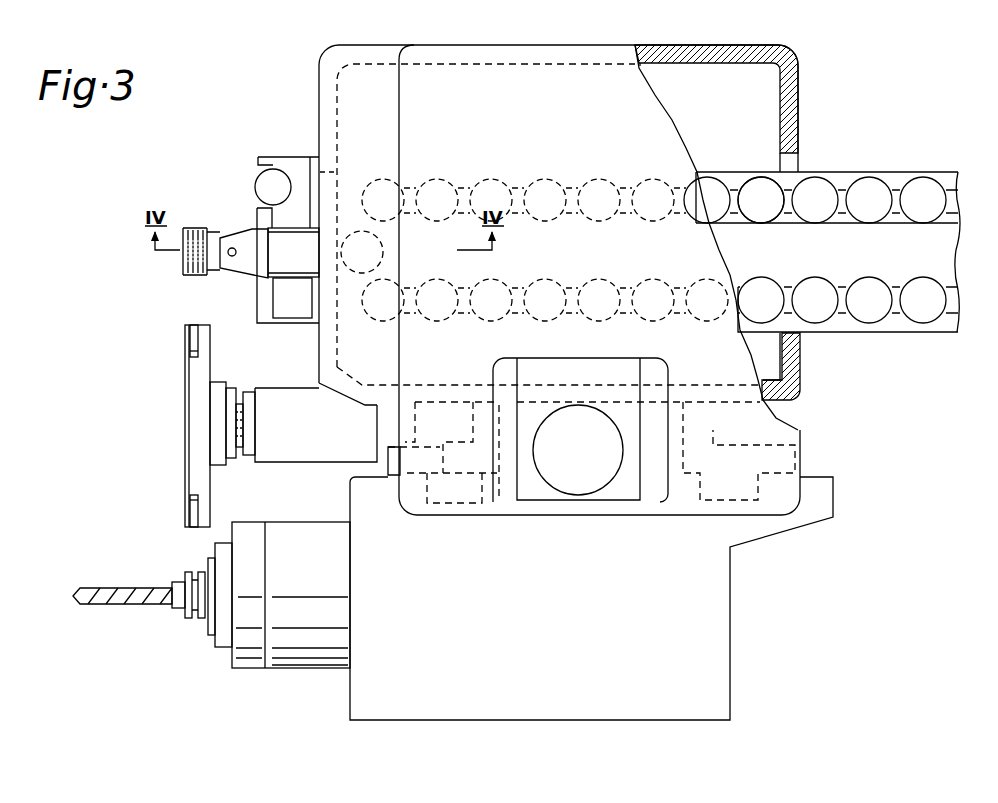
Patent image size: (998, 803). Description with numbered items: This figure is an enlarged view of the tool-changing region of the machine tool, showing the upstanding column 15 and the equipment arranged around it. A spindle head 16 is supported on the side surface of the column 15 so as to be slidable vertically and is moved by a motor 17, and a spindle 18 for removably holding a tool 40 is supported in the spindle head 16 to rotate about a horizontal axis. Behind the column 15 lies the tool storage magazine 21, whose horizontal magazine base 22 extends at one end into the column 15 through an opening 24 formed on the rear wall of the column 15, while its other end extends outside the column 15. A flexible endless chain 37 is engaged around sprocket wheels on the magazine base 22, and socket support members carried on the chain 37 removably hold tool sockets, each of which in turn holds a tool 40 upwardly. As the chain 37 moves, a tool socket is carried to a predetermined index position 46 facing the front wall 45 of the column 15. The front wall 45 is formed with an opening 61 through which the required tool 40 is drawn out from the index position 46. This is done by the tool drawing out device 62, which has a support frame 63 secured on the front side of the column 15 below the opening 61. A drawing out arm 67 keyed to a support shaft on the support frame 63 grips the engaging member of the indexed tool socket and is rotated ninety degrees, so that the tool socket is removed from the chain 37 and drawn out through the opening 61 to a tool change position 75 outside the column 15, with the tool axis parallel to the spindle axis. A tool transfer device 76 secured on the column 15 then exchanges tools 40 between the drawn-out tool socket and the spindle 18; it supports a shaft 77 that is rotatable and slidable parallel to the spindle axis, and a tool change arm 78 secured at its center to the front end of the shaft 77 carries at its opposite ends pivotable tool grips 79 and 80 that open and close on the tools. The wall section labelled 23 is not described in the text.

The column 15 is at (687, 46).
The spindle head 16 is at (528, 700).
The motor 17 is at (593, 478).
The spindle 18 is at (210, 627).
The tool storage magazine 21 is at (884, 166).
The magazine base 22 is at (905, 328).
The housing wall 23 is at (800, 116).
The opening 24 is at (802, 338).
The chain 37 is at (738, 188).
The tool 40 is at (932, 188).
The front wall 45 is at (337, 117).
The index position 46 is at (369, 247).
The opening 61 is at (330, 318).
The tool drawing out device 62 is at (240, 211).
The support frame 63 is at (243, 266).
The drawing out arm 67 is at (282, 268).
The tool change position 75 is at (176, 270).
The tool transfer device 76 is at (267, 384).
The shaft 77 is at (257, 437).
The tool change arm 78 is at (200, 408).
The tool grip 79 is at (187, 340).
The tool grip 80 is at (187, 510).